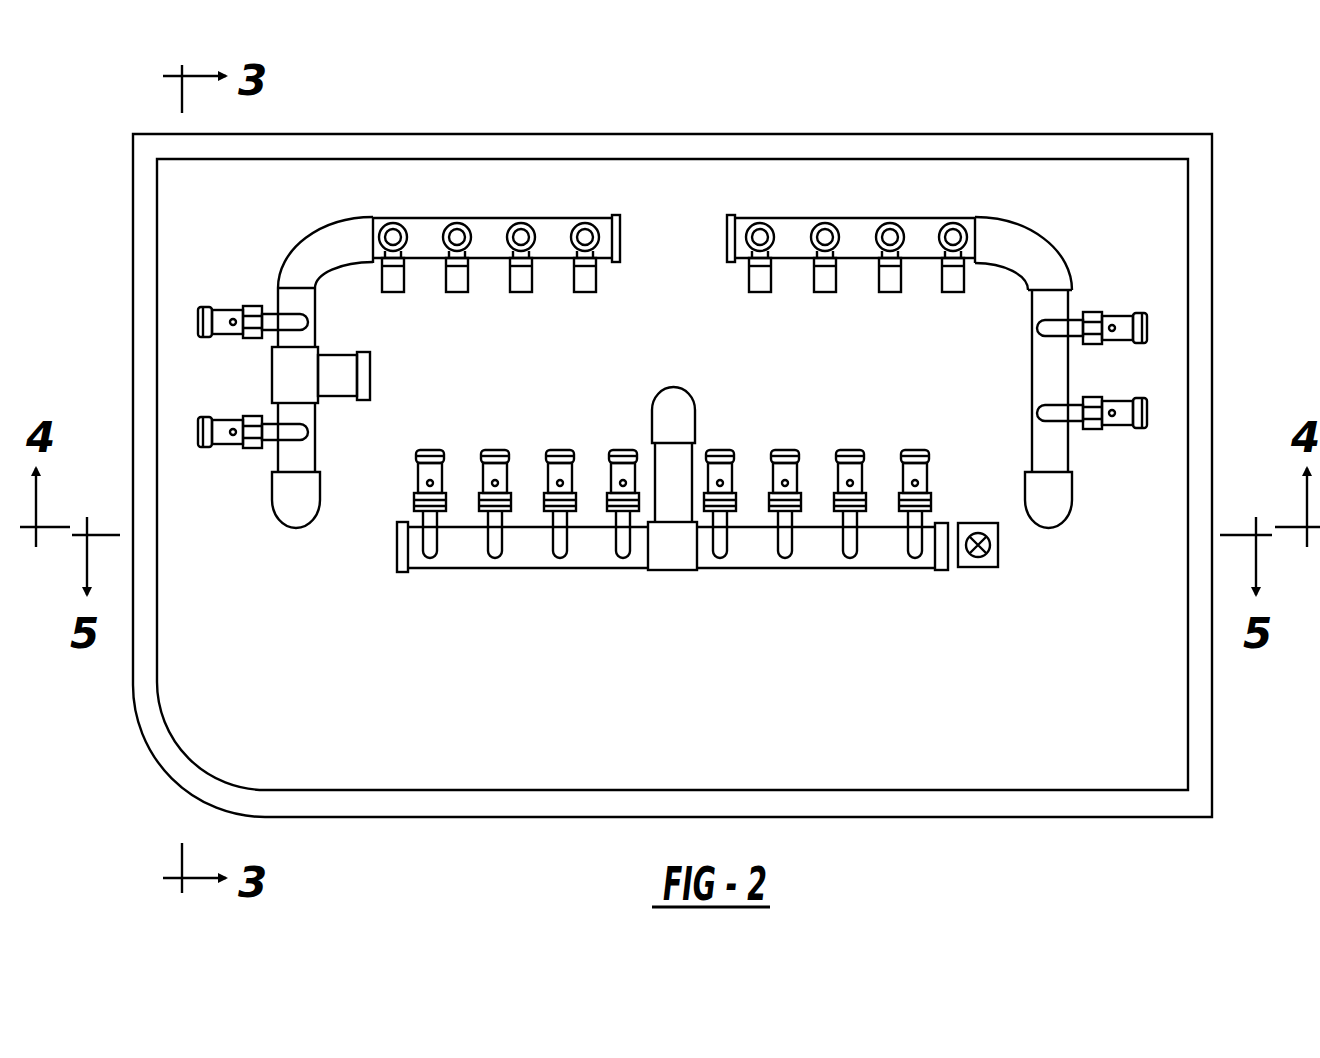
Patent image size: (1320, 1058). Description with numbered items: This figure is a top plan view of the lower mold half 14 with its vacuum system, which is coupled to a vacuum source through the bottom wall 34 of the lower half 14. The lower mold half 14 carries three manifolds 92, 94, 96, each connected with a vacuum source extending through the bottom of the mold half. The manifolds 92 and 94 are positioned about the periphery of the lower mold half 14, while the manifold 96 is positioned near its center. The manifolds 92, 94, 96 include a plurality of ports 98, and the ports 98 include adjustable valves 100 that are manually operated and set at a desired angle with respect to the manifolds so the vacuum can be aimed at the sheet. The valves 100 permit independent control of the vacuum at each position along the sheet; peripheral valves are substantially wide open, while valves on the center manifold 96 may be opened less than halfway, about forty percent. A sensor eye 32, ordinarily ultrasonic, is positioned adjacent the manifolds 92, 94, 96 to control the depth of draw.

The lower mold half 14 is at (806, 113).
The sensor eye 32 is at (978, 567).
The bottom wall 34 is at (803, 380).
The manifold 92 is at (443, 202).
The manifold 94 is at (1032, 210).
The manifold 96 is at (823, 593).
The ports 98 is at (285, 333).
The valves 100 is at (474, 262).